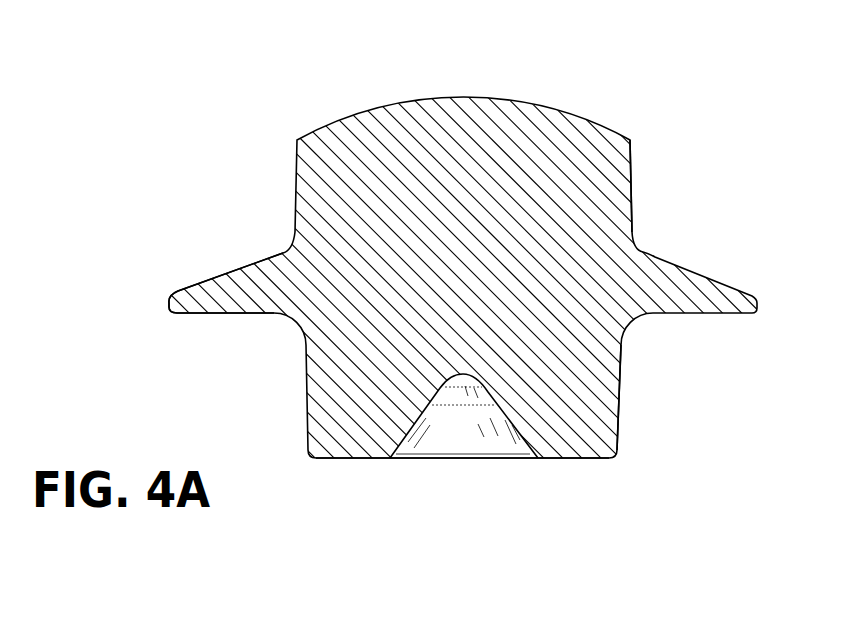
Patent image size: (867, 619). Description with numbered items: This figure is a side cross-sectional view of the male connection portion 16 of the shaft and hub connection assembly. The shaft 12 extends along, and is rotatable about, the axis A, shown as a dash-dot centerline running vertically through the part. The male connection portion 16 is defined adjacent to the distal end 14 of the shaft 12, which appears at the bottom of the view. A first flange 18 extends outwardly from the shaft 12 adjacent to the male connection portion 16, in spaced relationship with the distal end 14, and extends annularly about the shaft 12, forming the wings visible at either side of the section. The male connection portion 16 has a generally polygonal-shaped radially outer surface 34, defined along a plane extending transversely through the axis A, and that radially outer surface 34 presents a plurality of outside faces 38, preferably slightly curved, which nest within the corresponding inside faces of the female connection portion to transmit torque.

The shaft 12 is at (623, 422).
The distal end 14 is at (345, 460).
The male connection portion 16 is at (433, 278).
The first flange 18 is at (190, 303).
The radially outer surface 34 is at (622, 390).
The outside faces 38 is at (631, 186).
The axis A is at (463, 145).